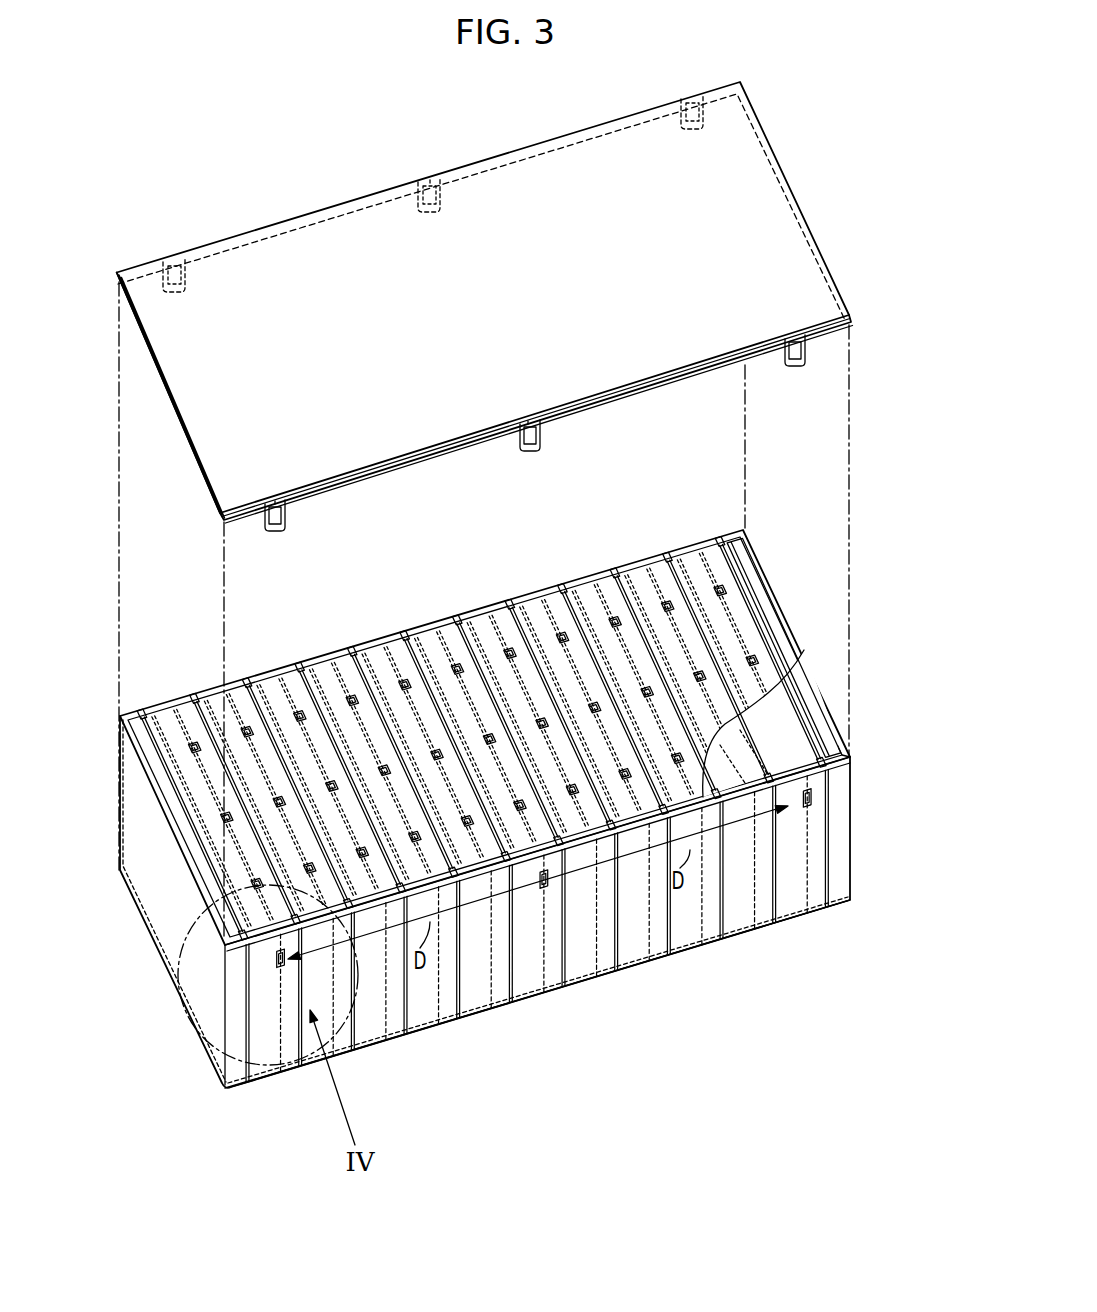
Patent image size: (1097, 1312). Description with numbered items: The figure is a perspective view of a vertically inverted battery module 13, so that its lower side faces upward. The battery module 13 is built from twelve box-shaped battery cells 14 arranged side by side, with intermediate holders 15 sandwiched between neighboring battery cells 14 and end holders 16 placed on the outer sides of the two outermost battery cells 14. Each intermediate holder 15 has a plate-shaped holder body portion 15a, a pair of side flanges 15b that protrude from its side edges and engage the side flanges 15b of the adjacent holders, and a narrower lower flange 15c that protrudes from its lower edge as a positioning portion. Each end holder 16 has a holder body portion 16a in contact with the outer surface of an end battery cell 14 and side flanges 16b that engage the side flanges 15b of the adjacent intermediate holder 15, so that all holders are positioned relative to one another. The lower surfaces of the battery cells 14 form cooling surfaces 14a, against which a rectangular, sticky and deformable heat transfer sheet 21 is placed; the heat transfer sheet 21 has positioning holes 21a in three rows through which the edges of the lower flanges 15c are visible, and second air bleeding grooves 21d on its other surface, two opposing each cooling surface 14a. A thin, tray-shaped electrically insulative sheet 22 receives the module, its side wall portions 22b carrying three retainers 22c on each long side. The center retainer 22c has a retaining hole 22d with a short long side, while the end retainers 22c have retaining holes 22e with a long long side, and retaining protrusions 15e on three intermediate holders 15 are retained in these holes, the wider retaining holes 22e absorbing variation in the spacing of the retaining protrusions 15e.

The battery module 13 is at (650, 522).
The battery cell 14 is at (772, 704).
The cooling surface 14a is at (852, 772).
The intermediate holder 15 is at (767, 948).
The holder body portion 15a is at (775, 880).
The side flange 15b is at (730, 922).
The lower flange 15c is at (575, 582).
The retaining protrusion 15e is at (808, 803).
The end holder 16 is at (863, 802).
The holder body portion 16a is at (160, 918).
The side flange 16b is at (842, 895).
The heat transfer sheet 21 is at (412, 618).
The positioning hole 21a is at (620, 548).
The second air bleeding groove 21d is at (712, 540).
The electrically insulative sheet 22 is at (523, 147).
The side wall portion 22b is at (305, 218).
The retainer 22c is at (450, 205).
The retaining hole 22d is at (432, 220).
The retaining hole 22e is at (703, 140).